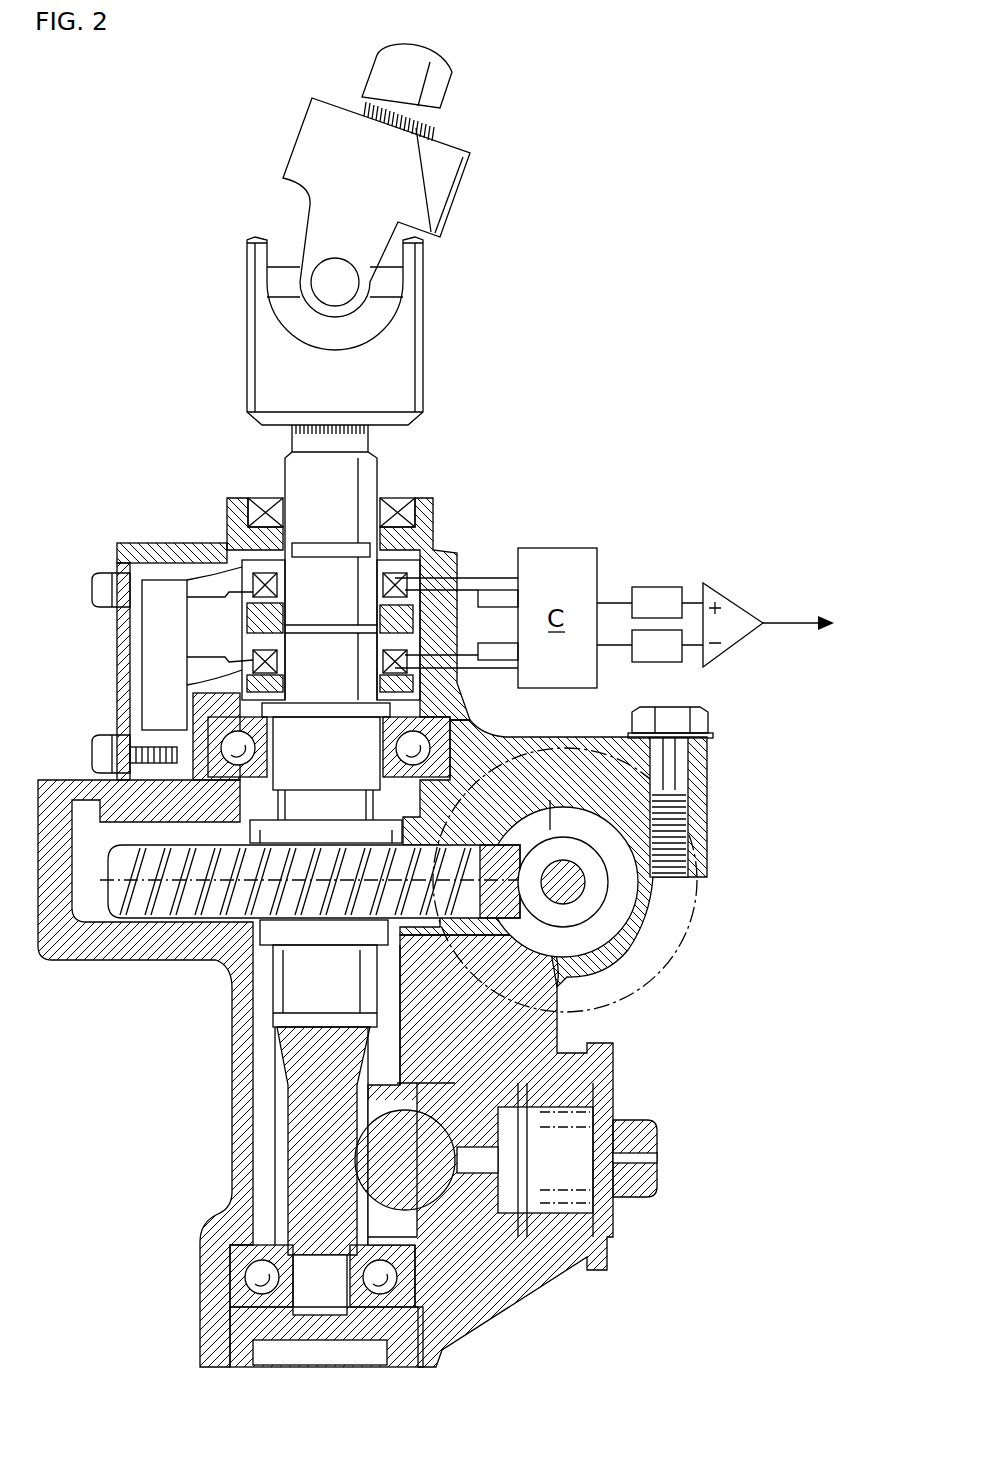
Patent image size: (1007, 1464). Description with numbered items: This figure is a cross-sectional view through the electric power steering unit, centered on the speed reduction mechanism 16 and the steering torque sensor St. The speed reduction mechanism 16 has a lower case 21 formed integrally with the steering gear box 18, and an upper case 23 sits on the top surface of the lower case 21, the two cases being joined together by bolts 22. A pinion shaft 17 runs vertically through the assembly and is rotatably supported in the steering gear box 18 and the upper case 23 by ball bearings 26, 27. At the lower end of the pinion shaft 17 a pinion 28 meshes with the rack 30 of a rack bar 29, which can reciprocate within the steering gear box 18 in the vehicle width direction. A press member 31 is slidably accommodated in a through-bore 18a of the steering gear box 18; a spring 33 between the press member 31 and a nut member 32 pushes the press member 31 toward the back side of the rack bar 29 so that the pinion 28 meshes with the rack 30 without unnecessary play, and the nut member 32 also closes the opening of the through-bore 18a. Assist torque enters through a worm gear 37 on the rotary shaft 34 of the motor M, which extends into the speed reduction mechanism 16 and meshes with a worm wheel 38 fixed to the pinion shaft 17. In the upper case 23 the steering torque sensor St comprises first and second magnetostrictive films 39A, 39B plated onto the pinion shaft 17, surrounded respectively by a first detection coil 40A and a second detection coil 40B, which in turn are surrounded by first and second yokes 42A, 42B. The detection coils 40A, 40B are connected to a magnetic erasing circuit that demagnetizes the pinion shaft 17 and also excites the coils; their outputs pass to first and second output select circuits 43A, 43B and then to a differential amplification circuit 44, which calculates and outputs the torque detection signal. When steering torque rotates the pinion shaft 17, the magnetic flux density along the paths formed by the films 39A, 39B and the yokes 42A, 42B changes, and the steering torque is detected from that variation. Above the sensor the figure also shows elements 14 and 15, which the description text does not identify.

The steering shaft 14 is at (437, 98).
The universal joint 15 is at (252, 203).
The speed reduction mechanism 16 is at (221, 619).
The pinion shaft 17 is at (450, 728).
The steering gear box 18 is at (208, 1183).
The through-bore 18a is at (450, 1080).
The lower case 21 is at (145, 950).
The bolts 22 is at (708, 722).
The upper case 23 is at (450, 553).
The ball bearing 26 is at (253, 1275).
The ball bearing 27 is at (239, 776).
The pinion 28 is at (283, 1160).
The rack bar 29 is at (389, 1090).
The rack 30 is at (360, 1123).
The press member 31 is at (460, 1227).
The nut member 32 is at (610, 1110).
The spring 33 is at (620, 1207).
The rotary shaft 34 is at (575, 890).
The worm gear 37 is at (560, 847).
The worm wheel 38 is at (103, 895).
The first magnetostrictive film 39A is at (325, 568).
The second magnetostrictive film 39B is at (328, 672).
The first detection coil 40A is at (232, 552).
The second detection coil 40B is at (253, 592).
The first yoke 42A is at (167, 543).
The second yoke 42B is at (253, 670).
The first output select circuit 43A is at (653, 587).
The second output select circuit 43B is at (653, 662).
The differential amplification circuit 44 is at (731, 600).
The steering torque sensor St is at (424, 545).
The motor M is at (643, 987).